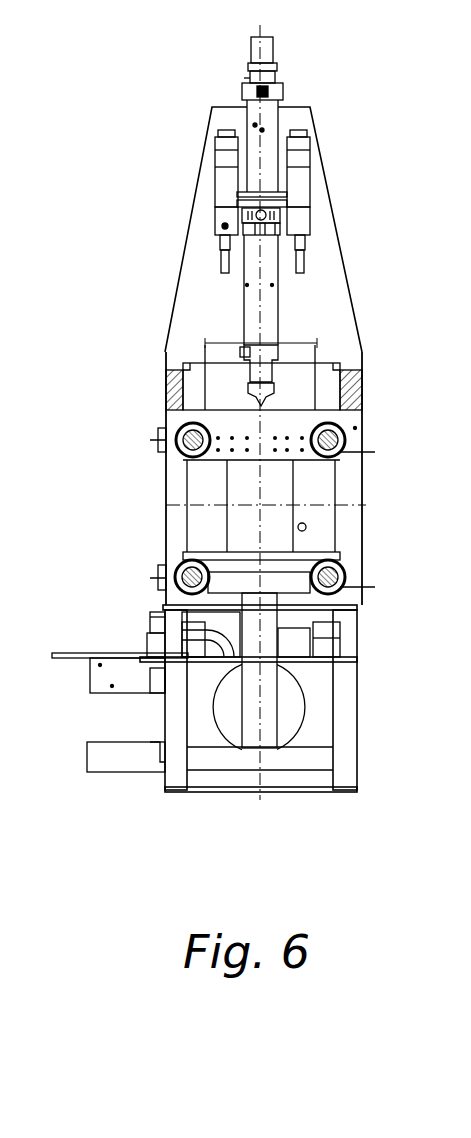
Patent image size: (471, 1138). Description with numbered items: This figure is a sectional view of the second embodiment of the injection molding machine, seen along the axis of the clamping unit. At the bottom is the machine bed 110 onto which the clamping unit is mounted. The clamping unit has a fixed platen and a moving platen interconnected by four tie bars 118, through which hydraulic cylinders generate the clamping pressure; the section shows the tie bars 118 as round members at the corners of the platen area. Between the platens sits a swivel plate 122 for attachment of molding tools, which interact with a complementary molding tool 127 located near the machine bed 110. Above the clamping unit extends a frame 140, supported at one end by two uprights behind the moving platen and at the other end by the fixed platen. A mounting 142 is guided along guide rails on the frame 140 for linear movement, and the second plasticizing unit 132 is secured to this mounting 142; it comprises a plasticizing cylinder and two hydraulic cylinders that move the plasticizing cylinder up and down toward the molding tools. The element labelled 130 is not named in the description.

The machine bed 110 is at (342, 703).
The tie bars 118 is at (175, 440).
The swivel plate 122 is at (214, 496).
The complementary molding tool 127 is at (265, 628).
The spindle column 130 is at (263, 297).
The second plasticizing unit 132 is at (306, 99).
The frame 140 is at (165, 393).
The mounting 142 is at (200, 275).